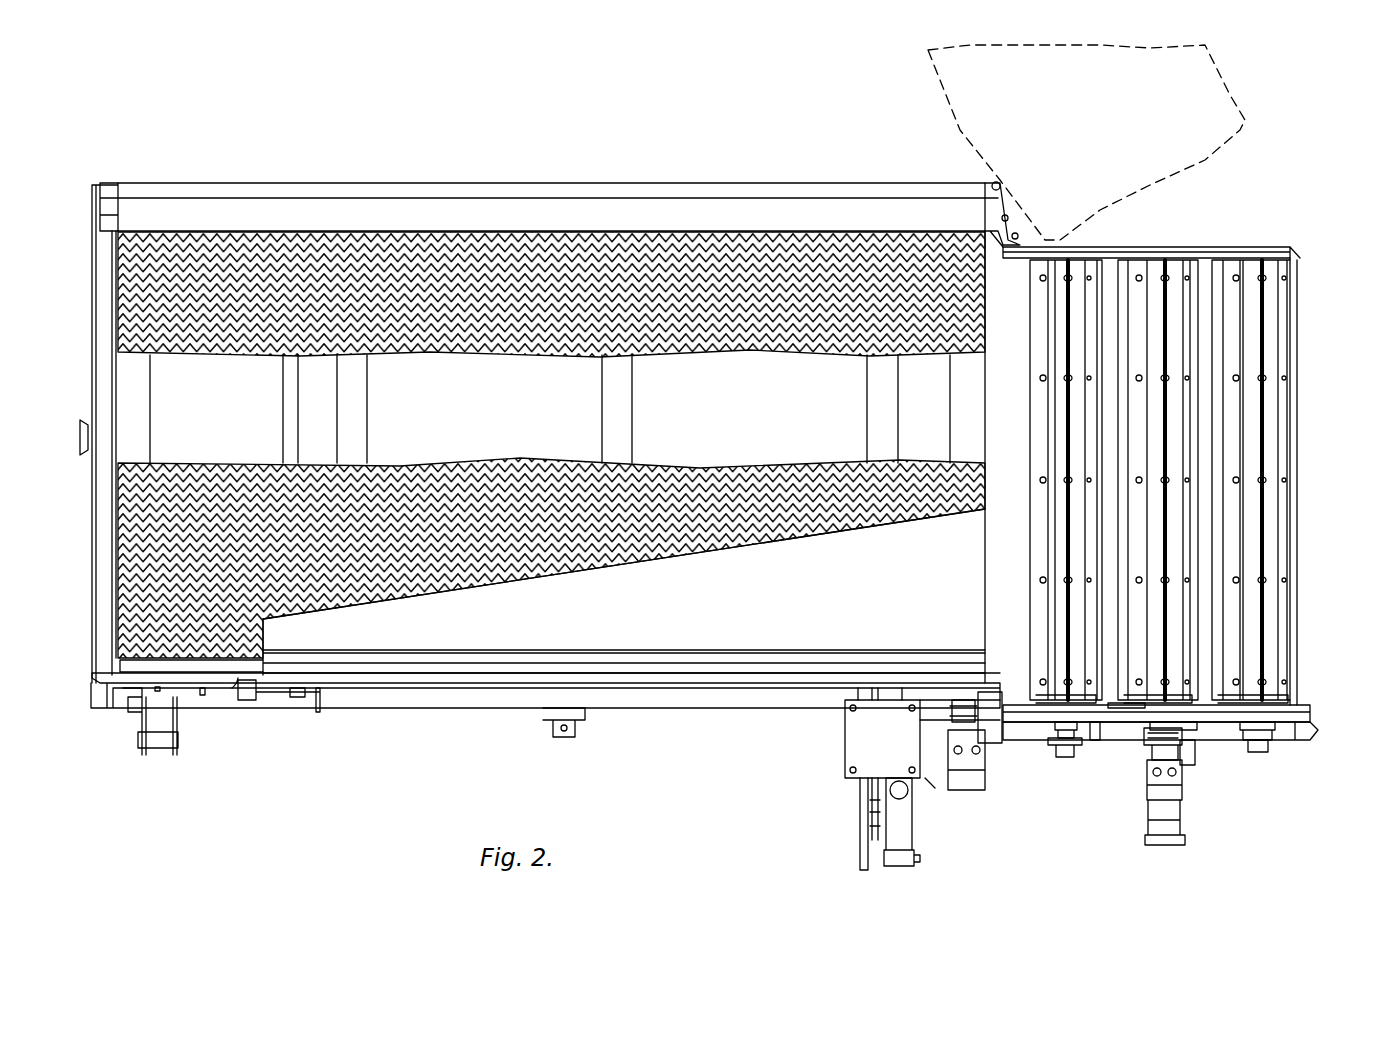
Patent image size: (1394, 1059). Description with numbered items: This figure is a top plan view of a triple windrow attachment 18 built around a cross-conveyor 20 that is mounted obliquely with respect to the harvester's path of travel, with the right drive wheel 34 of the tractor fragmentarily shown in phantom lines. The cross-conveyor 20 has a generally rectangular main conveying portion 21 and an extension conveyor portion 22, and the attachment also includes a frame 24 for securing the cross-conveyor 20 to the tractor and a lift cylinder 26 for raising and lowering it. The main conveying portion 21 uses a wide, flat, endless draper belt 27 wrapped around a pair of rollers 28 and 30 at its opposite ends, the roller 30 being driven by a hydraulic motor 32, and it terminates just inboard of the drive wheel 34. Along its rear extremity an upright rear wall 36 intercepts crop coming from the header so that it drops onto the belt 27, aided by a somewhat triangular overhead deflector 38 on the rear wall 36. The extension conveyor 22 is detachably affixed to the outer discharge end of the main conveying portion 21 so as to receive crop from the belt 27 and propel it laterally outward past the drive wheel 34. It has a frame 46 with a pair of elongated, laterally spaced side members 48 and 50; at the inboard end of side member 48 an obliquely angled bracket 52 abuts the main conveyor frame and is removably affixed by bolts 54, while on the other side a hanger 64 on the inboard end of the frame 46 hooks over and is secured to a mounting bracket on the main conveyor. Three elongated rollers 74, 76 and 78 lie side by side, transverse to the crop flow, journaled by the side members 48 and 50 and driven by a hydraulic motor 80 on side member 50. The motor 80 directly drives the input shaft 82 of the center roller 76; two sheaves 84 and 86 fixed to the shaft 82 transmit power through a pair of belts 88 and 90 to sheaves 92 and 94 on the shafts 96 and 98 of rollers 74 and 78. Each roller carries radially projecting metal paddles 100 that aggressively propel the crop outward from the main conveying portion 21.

The triple windrow attachment 18 is at (738, 800).
The cross-conveyor 20 is at (505, 725).
The main conveying portion 21 is at (203, 175).
The extension conveyor portion 22 is at (1268, 232).
The frame 24 is at (858, 752).
The lift cylinder 26 is at (898, 828).
The draper belt 27 is at (325, 245).
The roller 28 is at (140, 414).
The roller 30 is at (962, 418).
The hydraulic motor 32 is at (968, 775).
The right drive wheel 34 is at (975, 82).
The rear wall 36 is at (358, 680).
The overhead deflector 38 is at (765, 555).
The frame 46 is at (1325, 762).
The side member 48 is at (1185, 245).
The side member 50 is at (1305, 714).
The bracket 52 is at (1012, 222).
The bolts 54 is at (998, 190).
The hanger 64 is at (1003, 695).
The roller 74 is at (1050, 607).
The center roller 76 is at (1136, 690).
The roller 78 is at (1315, 600).
The hydraulic motor 80 is at (1172, 808).
The input shaft 82 is at (1176, 725).
The sheave 84 is at (1140, 728).
The sheave 86 is at (1185, 740).
The belt 88 is at (1096, 740).
The belt 90 is at (1242, 740).
The sheave 92 is at (1050, 745).
The sheave 94 is at (1306, 733).
The shaft 96 is at (1058, 732).
The shaft 98 is at (1260, 752).
The paddles 100 is at (1292, 522).